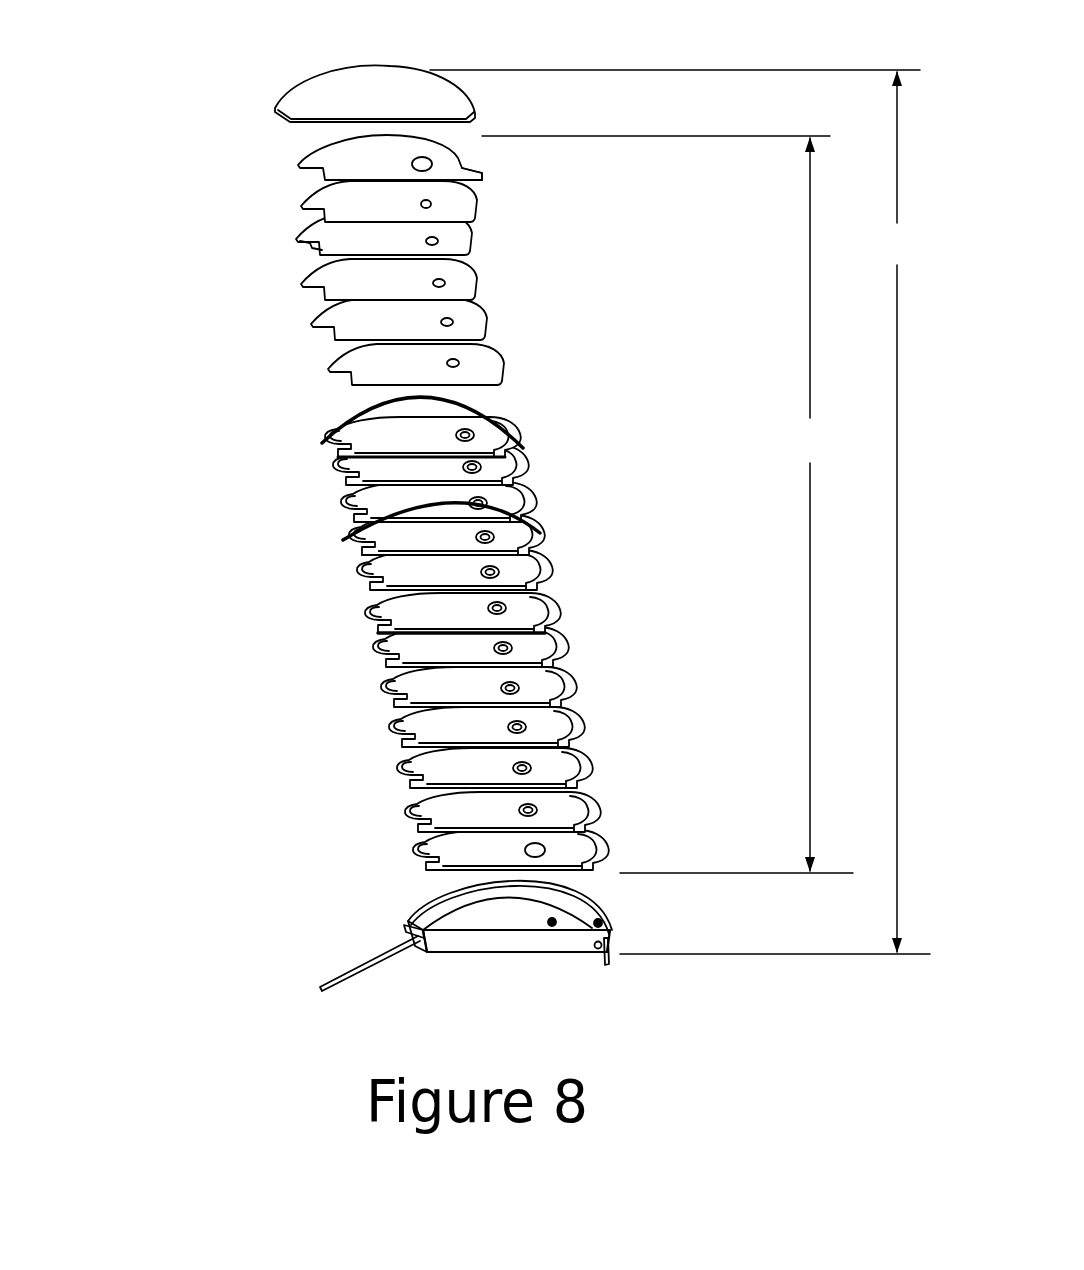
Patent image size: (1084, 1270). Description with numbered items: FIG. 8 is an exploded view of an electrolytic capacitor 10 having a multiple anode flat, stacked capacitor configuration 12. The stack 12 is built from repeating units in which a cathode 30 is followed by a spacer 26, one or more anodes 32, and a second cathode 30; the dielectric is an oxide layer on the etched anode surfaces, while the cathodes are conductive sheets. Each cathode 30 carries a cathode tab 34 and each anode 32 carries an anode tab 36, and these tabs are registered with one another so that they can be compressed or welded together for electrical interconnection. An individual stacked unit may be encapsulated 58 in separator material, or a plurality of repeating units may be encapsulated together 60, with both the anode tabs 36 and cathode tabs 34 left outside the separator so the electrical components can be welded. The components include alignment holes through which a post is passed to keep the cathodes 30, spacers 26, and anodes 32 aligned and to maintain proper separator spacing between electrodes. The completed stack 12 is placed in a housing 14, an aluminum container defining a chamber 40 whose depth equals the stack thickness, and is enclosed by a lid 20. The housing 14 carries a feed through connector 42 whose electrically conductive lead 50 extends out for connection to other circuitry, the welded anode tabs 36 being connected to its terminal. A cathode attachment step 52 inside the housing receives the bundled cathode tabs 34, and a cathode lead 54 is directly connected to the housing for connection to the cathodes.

The capacitor 10 is at (680, 512).
The stacked capacitor configuration 12 is at (587, 504).
The housing 14 is at (498, 958).
The lid 20 is at (283, 100).
The spacer 26 is at (408, 283).
The cathode 30 is at (432, 127).
The anode 32 is at (496, 322).
The cathode tab 34 is at (485, 170).
The anode tab 36 is at (313, 250).
The chamber 40 is at (554, 920).
The feed through connector 42 is at (400, 930).
The electrically conductive lead 50 is at (320, 983).
The cathode attachment step 52 is at (613, 921).
The cathode lead 54 is at (611, 969).
The encapsulated individual stacked capacitor configuration 58 is at (468, 418).
The encapsulated multiple stacked capacitor configuration 60 is at (544, 527).